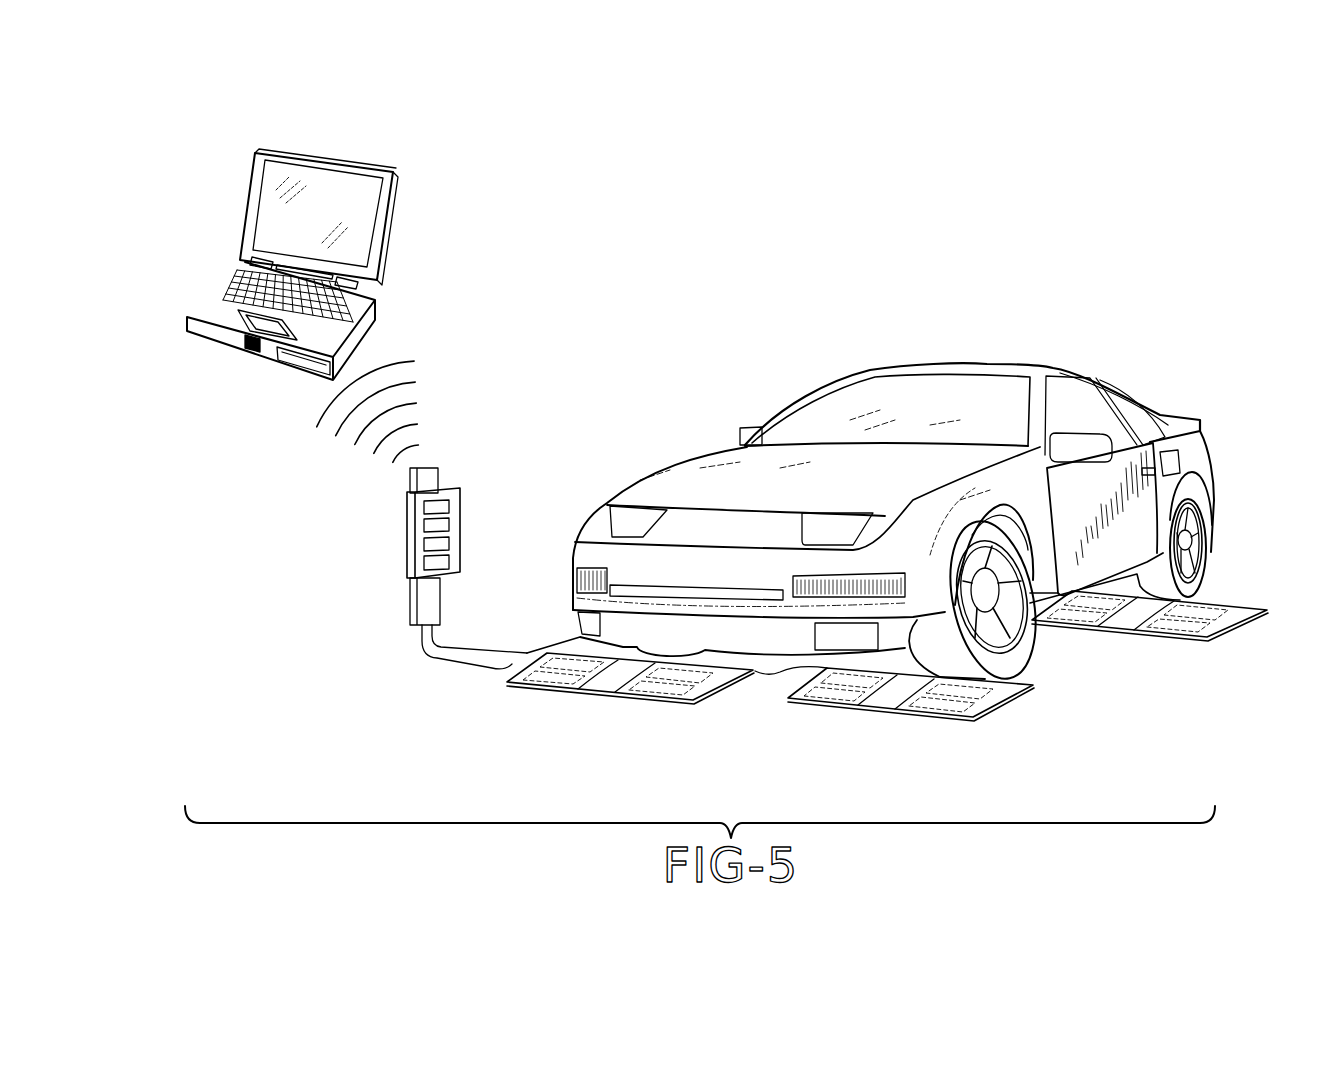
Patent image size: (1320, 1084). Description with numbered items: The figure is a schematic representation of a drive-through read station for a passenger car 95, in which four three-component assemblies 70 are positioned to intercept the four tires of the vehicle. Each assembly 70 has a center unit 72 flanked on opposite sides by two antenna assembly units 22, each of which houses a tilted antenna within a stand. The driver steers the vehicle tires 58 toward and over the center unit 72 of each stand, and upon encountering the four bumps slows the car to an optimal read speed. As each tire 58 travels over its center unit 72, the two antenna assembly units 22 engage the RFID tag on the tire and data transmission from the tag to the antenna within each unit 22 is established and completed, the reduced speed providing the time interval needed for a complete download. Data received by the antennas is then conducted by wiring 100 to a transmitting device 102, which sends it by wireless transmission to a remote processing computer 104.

The processing computer 104 is at (372, 167).
The transmitting device 102 is at (407, 532).
The wiring 100 is at (490, 667).
The vehicle 95 is at (988, 366).
The vehicle tire 58 is at (1205, 568).
The three-component assembly 70 is at (565, 694).
The center unit 72 is at (603, 682).
The antenna assembly unit 22 is at (550, 672).